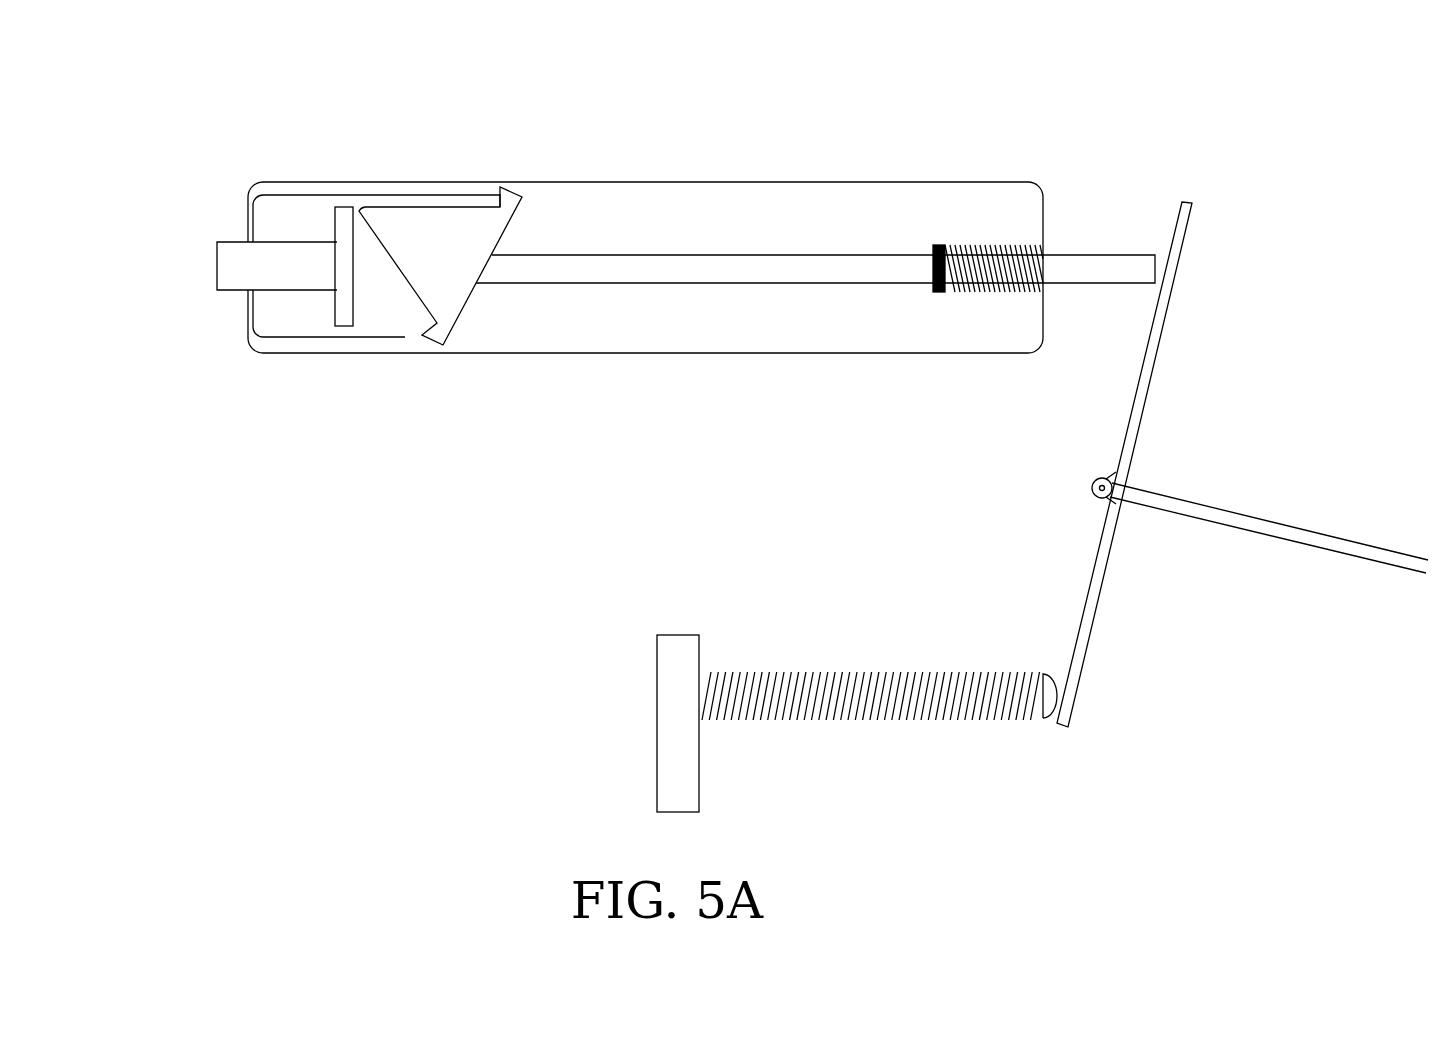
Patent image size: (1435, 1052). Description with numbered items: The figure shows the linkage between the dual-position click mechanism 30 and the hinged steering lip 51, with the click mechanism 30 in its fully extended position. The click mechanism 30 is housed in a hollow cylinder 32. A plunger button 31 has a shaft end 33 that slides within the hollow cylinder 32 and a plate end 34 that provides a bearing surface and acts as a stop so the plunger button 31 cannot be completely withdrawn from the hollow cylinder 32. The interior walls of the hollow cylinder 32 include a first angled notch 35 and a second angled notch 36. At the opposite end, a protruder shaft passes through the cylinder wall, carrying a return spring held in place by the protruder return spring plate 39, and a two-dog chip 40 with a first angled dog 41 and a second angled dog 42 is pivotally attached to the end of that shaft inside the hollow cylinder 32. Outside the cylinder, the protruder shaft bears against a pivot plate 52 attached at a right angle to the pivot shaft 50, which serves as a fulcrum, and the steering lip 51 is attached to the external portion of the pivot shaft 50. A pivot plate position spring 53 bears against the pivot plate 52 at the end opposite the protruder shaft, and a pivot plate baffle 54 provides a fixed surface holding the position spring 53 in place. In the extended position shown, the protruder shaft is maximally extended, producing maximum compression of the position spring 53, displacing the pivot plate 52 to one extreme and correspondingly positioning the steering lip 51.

The click mechanism 30 is at (597, 393).
The plunger button 31 is at (285, 255).
The hollow cylinder 32 is at (693, 183).
The shaft end 33 is at (208, 260).
The plate end 34 is at (360, 295).
The first angled notch 35 is at (398, 343).
The second angled notch 36 is at (493, 183).
The protruder return spring plate 39 is at (840, 253).
The two-dog chip 40 is at (420, 245).
The first angled dog 41 is at (422, 323).
The second angled dog 42 is at (490, 198).
The pivot shaft 50 is at (1088, 488).
The steering lip 51 is at (1315, 548).
The pivot plate 52 is at (1142, 412).
The pivot plate position spring 53 is at (978, 728).
The pivot plate baffle 54 is at (655, 705).